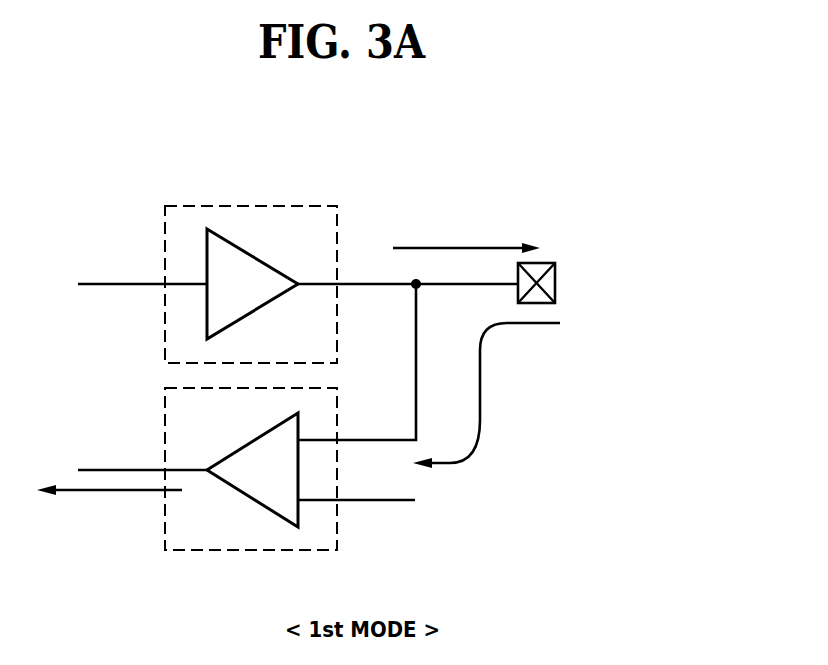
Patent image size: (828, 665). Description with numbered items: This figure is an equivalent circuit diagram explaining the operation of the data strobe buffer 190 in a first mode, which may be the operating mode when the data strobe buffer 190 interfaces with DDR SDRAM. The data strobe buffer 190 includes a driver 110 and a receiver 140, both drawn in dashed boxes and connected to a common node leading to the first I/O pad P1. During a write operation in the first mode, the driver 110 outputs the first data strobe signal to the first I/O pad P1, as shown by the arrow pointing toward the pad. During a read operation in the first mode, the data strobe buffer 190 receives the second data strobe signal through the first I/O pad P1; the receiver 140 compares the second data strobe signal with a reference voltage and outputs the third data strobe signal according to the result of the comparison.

The driver 110 is at (302, 205).
The receiver 140 is at (337, 538).
The data strobe buffer 190 is at (346, 327).
The first I/O pad P1 is at (555, 283).